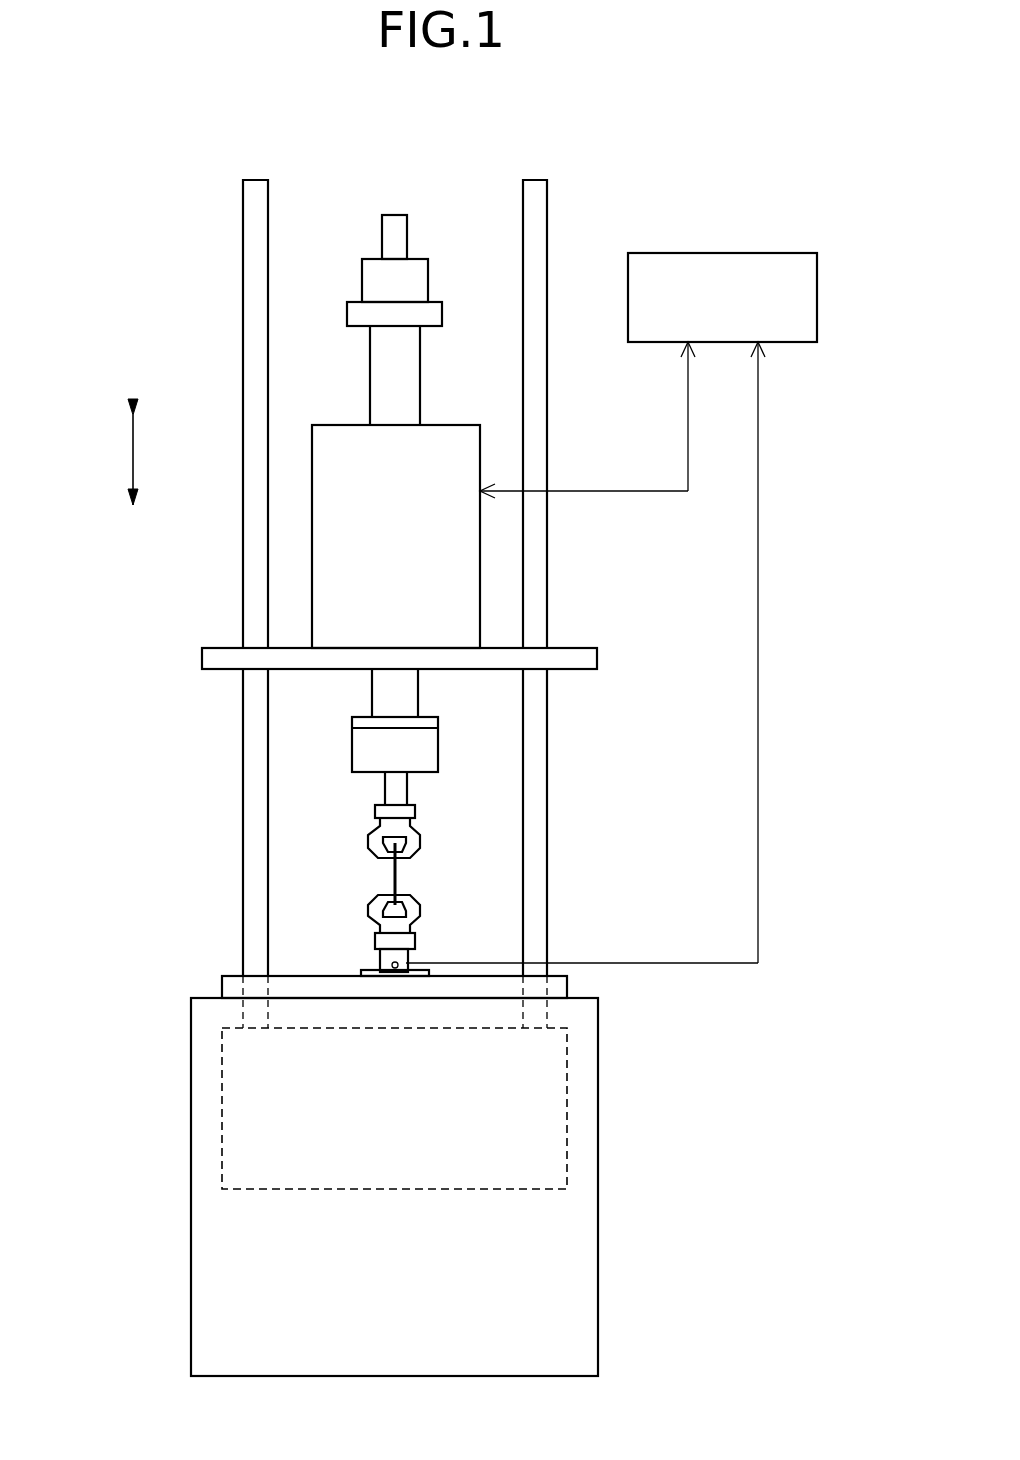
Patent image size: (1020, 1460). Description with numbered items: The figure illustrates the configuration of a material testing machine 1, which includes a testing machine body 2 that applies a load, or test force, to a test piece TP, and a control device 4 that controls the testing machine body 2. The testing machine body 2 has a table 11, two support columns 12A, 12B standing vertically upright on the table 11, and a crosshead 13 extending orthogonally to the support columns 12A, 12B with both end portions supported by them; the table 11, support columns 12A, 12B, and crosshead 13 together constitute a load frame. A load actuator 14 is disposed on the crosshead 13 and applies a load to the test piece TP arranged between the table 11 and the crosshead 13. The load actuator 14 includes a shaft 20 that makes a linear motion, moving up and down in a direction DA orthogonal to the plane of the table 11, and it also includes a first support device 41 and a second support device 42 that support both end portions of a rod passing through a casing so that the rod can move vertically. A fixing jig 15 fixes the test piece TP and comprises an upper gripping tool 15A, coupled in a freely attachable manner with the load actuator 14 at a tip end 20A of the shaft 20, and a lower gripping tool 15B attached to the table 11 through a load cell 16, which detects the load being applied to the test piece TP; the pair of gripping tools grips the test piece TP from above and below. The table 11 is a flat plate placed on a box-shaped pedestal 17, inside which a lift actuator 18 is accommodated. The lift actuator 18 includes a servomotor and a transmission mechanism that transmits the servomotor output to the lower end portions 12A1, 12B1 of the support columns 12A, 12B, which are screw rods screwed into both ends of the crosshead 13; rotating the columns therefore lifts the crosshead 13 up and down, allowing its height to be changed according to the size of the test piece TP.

The material testing machine 1 is at (742, 82).
The testing machine body 2 is at (553, 158).
The control device 4 is at (722, 253).
The table 11 is at (232, 976).
The support column 12A is at (181, 604).
The support column 12B is at (614, 604).
The lower end portion of support column 12A1 is at (243, 1015).
The lower end portion of support column 12B1 is at (547, 1015).
The crosshead 13 is at (576, 653).
The load actuator 14 is at (351, 497).
The fixing jig 15 is at (499, 872).
The upper gripping tool 15A is at (418, 830).
The lower gripping tool 15B is at (421, 916).
The load cell 16 is at (405, 963).
The pedestal 17 is at (191, 1117).
The lift actuator 18 is at (262, 1190).
The shaft 20 is at (407, 236).
The tip end of shaft 20A is at (385, 792).
The first support device 41 is at (415, 424).
The second support device 42 is at (408, 737).
The test piece TP is at (393, 877).
The direction DA is at (130, 458).